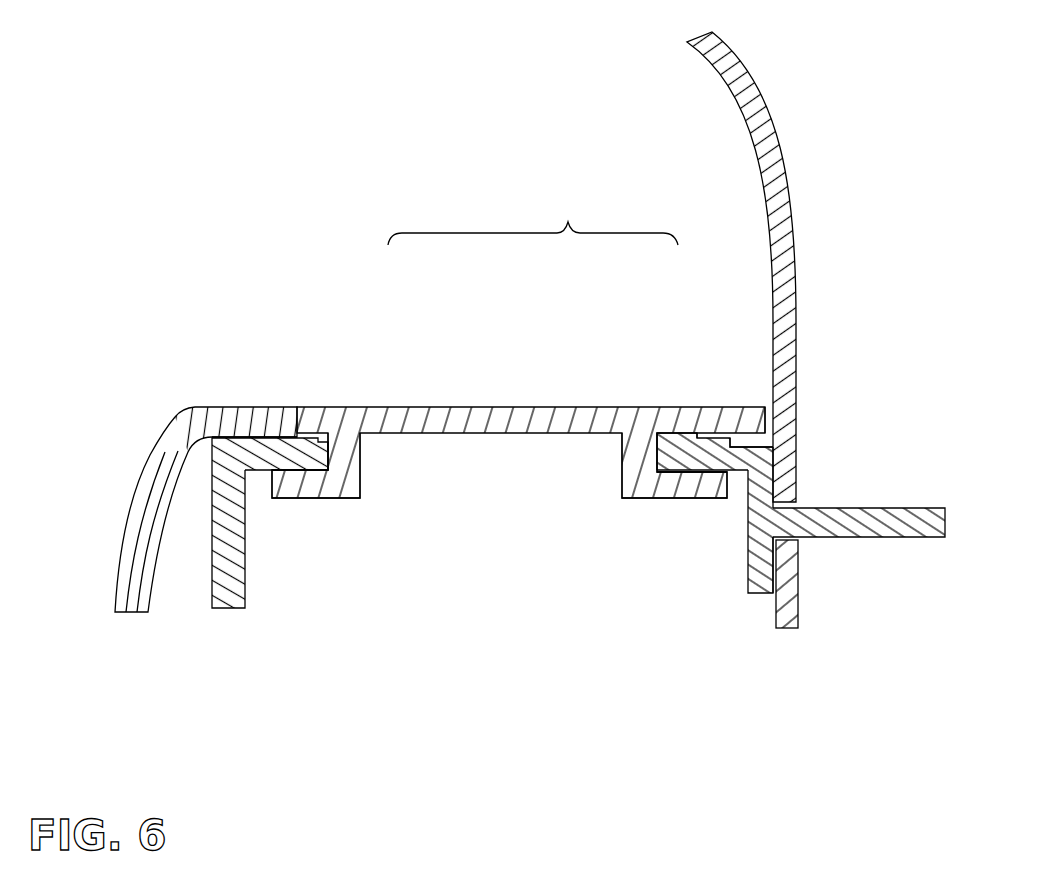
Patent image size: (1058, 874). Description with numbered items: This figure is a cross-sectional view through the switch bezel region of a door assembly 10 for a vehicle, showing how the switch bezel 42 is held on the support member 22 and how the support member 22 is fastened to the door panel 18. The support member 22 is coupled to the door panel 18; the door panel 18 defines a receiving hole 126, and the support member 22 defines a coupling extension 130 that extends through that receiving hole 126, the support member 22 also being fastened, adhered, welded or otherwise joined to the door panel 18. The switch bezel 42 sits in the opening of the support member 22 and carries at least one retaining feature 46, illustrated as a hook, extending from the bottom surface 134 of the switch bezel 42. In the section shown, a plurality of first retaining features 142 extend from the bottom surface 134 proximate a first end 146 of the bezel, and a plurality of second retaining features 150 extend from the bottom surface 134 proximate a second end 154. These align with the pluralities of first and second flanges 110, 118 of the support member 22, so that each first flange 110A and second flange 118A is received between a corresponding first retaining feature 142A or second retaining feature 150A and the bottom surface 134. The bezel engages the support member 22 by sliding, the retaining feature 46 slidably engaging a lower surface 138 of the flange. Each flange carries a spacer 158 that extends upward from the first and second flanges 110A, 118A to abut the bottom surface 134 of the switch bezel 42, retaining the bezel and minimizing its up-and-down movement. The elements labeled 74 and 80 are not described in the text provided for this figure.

The door assembly 10 is at (826, 74).
The door panel 18 is at (786, 206).
The support member 22 is at (803, 496).
The switch bezel 42 is at (605, 447).
The retaining feature 46 is at (533, 218).
The cover assembly 74 is at (163, 476).
The leg 80 is at (132, 587).
The first flanges 110 is at (167, 476).
The first flange 110A is at (258, 442).
The second flanges 118 is at (799, 392).
The second flange 118A is at (758, 443).
The receiving hole 126 is at (833, 508).
The coupling extension 130 is at (886, 525).
The bottom surface 134 is at (566, 465).
The lower surface 138 is at (249, 470).
The first retaining features 142 is at (395, 390).
The first retaining feature 142A is at (307, 483).
The first end 146 is at (293, 443).
The second retaining features 150 is at (646, 393).
The second retaining feature 150A is at (667, 482).
The second end 154 is at (768, 415).
The spacer 158 is at (307, 440).